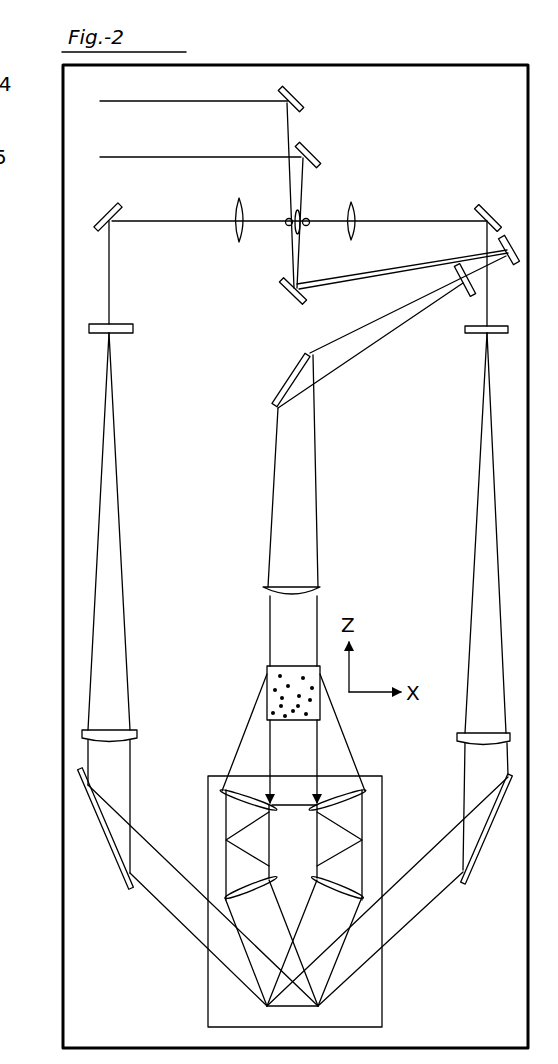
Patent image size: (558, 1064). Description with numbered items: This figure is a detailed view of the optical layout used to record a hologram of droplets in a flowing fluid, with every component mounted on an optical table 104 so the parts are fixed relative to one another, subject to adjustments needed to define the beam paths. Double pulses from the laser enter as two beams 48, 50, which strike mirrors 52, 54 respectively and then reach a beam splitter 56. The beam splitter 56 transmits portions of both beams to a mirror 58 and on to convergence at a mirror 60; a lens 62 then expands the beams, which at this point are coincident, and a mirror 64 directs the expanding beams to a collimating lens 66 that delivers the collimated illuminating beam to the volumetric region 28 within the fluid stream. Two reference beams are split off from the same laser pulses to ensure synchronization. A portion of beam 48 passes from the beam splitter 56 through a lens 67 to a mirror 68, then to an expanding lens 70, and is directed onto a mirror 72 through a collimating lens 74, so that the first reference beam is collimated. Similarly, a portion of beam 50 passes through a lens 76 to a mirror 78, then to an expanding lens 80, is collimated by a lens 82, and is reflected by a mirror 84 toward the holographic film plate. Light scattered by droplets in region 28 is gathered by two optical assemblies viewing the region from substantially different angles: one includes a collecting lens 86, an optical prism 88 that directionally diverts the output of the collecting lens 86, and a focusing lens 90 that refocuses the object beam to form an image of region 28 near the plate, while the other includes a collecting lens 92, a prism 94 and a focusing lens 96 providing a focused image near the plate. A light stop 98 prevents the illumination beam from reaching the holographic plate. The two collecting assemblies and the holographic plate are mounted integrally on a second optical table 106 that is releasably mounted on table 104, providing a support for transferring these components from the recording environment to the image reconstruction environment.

The volumetric region 28 is at (265, 712).
The beam 48 is at (152, 101).
The beam 50 is at (140, 157).
The mirror 52 is at (303, 104).
The mirror 54 is at (319, 159).
The beam splitter 56 is at (302, 209).
The mirror 58 is at (290, 302).
The mirror 60 is at (509, 265).
The lens 62 is at (462, 293).
The mirror 64 is at (278, 404).
The collimating lens 66 is at (300, 597).
The lens 67 is at (237, 212).
The mirror 68 is at (110, 206).
The expanding lens 70 is at (118, 322).
The mirror 72 is at (110, 848).
The collimating lens 74 is at (140, 737).
The lens 76 is at (356, 212).
The mirror 78 is at (490, 208).
The expanding lens 80 is at (470, 336).
The lens 82 is at (460, 735).
The mirror 84 is at (480, 857).
The collecting lens 86 is at (235, 801).
The optical prism 88 is at (226, 837).
The focusing lens 90 is at (232, 893).
The collecting lens 92 is at (350, 801).
The prism 94 is at (362, 837).
The focusing lens 96 is at (355, 893).
The light stop 98 is at (295, 804).
The optical table 104 is at (62, 622).
The optical table 106 is at (207, 998).